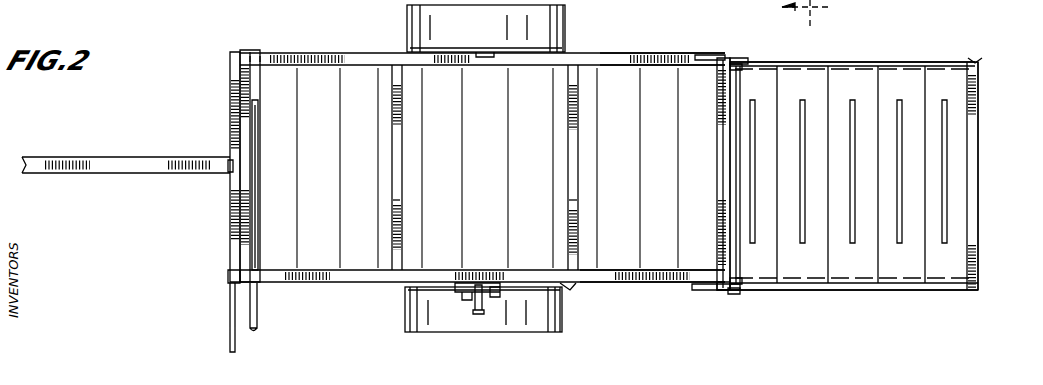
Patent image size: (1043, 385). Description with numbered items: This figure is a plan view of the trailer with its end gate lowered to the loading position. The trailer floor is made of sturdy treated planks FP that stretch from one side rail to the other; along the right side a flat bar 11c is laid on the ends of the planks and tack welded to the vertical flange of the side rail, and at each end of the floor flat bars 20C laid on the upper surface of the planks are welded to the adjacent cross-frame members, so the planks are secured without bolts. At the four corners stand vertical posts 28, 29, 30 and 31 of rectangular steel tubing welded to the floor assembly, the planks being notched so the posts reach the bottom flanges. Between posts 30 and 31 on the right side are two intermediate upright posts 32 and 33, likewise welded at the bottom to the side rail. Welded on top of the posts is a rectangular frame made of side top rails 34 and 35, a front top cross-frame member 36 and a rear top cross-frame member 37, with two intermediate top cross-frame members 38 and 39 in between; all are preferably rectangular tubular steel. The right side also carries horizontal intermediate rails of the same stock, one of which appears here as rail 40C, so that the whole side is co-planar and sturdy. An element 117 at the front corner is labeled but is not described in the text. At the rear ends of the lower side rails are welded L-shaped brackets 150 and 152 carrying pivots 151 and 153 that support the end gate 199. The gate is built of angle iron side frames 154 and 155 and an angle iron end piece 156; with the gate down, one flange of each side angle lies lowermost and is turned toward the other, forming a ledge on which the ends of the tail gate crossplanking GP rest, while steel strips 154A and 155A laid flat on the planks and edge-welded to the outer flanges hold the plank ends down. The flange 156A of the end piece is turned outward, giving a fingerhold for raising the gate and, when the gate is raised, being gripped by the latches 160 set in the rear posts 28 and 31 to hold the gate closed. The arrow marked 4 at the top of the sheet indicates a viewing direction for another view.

The section line 4 is at (822, 13).
The flat bar 11c is at (625, 62).
The flat bar 20C is at (872, 177).
The corner post 28 is at (721, 291).
The corner post 29 is at (232, 288).
The corner post 30 is at (244, 58).
The corner post 31 is at (726, 58).
The intermediate upright post 32 is at (400, 58).
The intermediate upright post 33 is at (575, 58).
The side top rail 34 is at (335, 283).
The side top rail 35 is at (320, 53).
The front top cross-frame member 36 is at (243, 78).
The rear top cross-frame member 37 is at (728, 115).
The intermediate top cross-frame member 38 is at (400, 197).
The intermediate top cross-frame member 39 is at (577, 200).
The rail section 40C is at (605, 283).
The front plate 117 is at (236, 118).
The L-shaped bracket 150 is at (700, 290).
The pivot 151 is at (733, 295).
The L-shaped bracket 152 is at (700, 55).
The pivot 153 is at (738, 58).
The angle iron side frame 154 is at (792, 290).
The steel strip 154A is at (848, 290).
The angle iron side frame 155 is at (830, 62).
The steel strip 155A is at (868, 62).
The angle iron end piece 156 is at (978, 183).
The flange 156A is at (978, 138).
The latch 160 is at (746, 64).
The corner connector 199 is at (959, 52).
The floor planks FP is at (498, 170).
The tail gate crossplanking GP is at (905, 265).